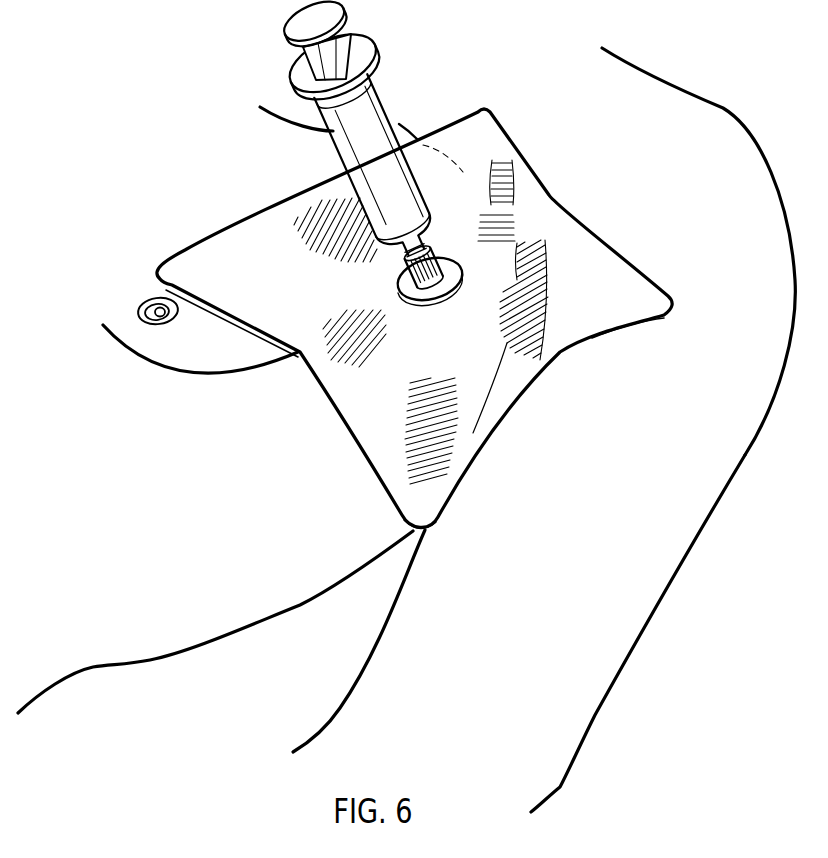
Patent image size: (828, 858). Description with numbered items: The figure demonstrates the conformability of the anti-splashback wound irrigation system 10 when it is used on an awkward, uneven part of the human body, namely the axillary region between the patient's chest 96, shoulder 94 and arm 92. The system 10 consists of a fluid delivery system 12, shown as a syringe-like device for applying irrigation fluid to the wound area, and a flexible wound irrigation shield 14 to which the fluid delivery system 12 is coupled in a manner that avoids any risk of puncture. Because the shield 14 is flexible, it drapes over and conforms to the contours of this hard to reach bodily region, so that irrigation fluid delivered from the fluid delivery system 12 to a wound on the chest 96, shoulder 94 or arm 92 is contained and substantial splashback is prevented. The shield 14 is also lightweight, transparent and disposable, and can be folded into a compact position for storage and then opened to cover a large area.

The anti-splashback wound irrigation system 10 is at (458, 90).
The fluid delivery system 12 is at (382, 135).
The flexible wound irrigation shield 14 is at (272, 212).
The arm 92 is at (691, 337).
The shoulder 94 is at (532, 123).
The chest 96 is at (104, 275).